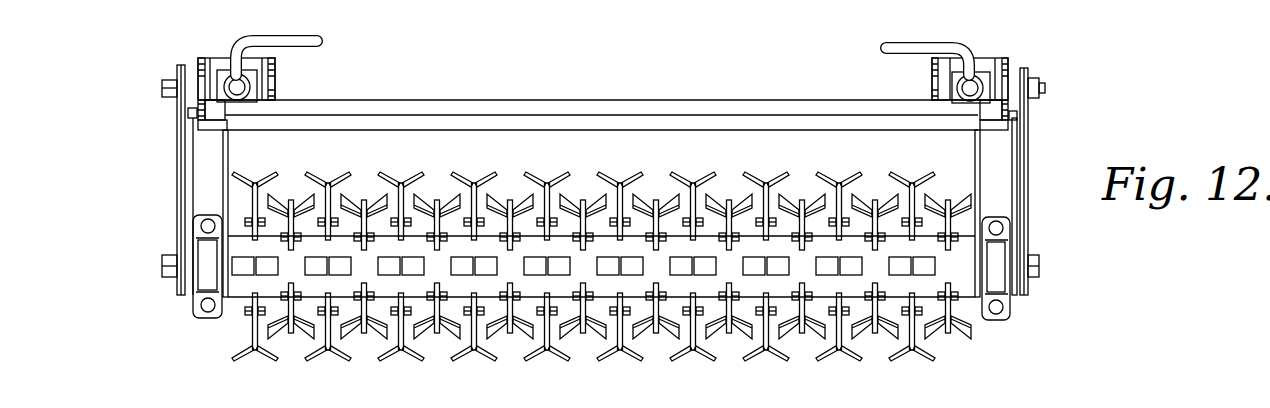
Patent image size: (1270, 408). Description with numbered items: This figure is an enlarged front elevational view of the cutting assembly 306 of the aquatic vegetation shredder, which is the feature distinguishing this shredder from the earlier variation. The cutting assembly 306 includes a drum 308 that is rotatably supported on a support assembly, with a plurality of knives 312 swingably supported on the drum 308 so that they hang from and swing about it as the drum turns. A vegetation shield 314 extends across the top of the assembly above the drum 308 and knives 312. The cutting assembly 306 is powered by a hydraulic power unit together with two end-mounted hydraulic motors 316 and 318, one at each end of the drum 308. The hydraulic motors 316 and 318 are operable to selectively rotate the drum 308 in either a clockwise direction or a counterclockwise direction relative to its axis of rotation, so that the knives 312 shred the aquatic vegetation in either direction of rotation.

The cutting assembly 306 is at (603, 83).
The drum 308 is at (957, 270).
The knives 312 is at (671, 174).
The vegetation shield 314 is at (720, 143).
The hydraulic motor 316 is at (265, 88).
The hydraulic motor 318 is at (947, 92).